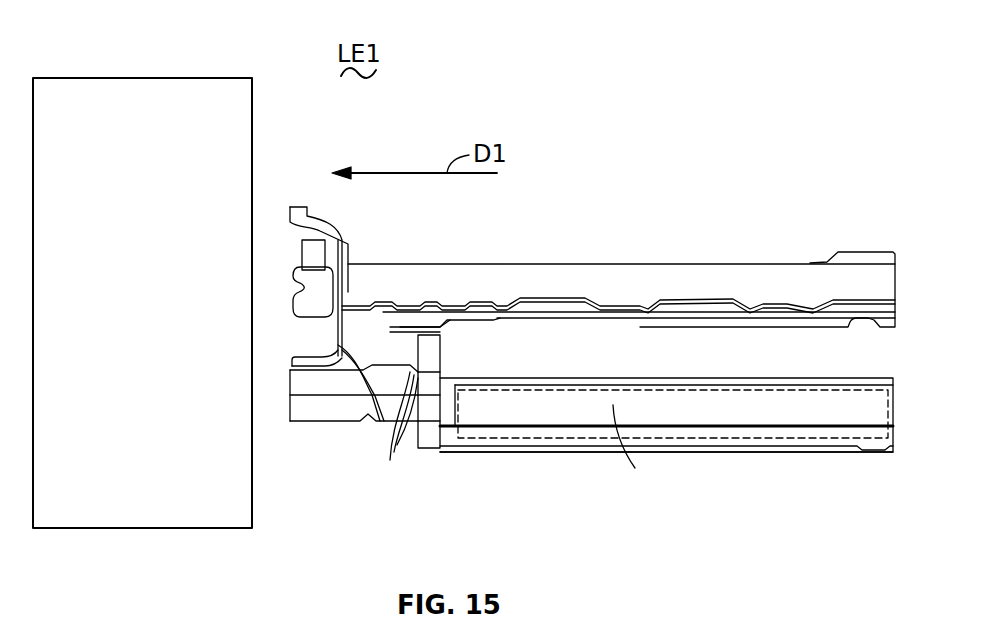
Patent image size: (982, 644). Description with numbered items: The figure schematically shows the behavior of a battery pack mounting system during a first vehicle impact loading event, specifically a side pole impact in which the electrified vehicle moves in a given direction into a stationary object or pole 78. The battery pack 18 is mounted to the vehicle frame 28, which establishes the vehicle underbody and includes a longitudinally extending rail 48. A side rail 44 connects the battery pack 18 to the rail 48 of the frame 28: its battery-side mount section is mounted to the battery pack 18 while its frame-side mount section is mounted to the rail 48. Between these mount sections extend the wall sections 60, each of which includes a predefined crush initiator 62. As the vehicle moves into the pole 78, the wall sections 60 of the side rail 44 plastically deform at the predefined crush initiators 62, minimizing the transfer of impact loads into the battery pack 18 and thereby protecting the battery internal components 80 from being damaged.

The pole 78 is at (131, 83).
The vehicle frame 28 is at (298, 199).
The rail 48 is at (328, 228).
The battery pack 18 is at (611, 360).
The predefined crush initiator 62 is at (337, 350).
The side rail 44 is at (343, 426).
The wall section 60 is at (400, 443).
The battery internal component 80 is at (813, 437).